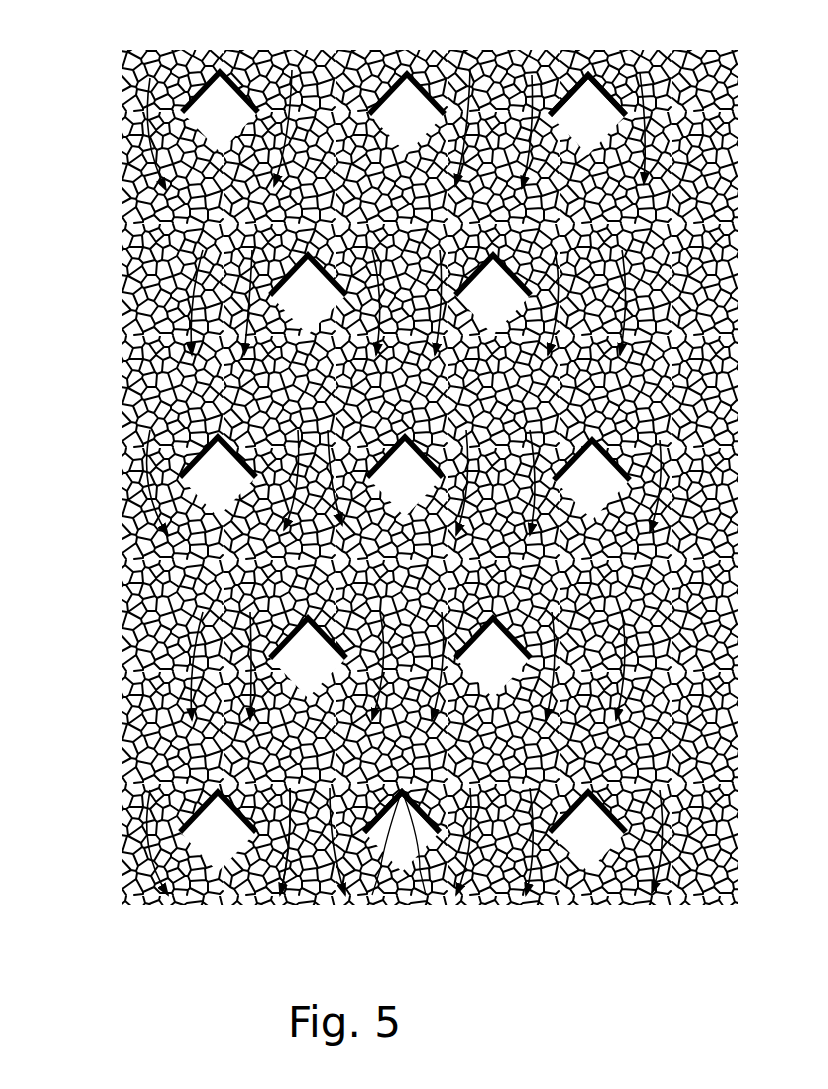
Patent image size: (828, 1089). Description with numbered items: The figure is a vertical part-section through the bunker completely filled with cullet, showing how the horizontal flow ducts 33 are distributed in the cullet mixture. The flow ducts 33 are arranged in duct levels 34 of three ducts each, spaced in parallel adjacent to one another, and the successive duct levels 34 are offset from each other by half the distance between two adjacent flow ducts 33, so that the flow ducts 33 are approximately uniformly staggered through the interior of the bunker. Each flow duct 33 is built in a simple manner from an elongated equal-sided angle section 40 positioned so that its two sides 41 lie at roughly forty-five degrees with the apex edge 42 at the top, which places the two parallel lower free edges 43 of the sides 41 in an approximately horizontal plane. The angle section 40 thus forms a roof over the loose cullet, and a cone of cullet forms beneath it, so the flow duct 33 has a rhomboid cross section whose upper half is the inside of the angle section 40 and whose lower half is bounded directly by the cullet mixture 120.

The open-cell foam sheet 120 is at (665, 278).
The flow duct 33 is at (590, 128).
The angle section 40 is at (240, 78).
The duct level 34 is at (155, 122).
The side 41 is at (385, 863).
The apex edge 42 is at (315, 842).
The lower free edge 43 is at (390, 820).